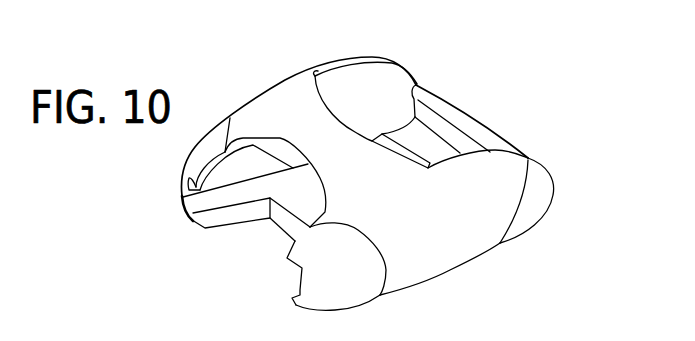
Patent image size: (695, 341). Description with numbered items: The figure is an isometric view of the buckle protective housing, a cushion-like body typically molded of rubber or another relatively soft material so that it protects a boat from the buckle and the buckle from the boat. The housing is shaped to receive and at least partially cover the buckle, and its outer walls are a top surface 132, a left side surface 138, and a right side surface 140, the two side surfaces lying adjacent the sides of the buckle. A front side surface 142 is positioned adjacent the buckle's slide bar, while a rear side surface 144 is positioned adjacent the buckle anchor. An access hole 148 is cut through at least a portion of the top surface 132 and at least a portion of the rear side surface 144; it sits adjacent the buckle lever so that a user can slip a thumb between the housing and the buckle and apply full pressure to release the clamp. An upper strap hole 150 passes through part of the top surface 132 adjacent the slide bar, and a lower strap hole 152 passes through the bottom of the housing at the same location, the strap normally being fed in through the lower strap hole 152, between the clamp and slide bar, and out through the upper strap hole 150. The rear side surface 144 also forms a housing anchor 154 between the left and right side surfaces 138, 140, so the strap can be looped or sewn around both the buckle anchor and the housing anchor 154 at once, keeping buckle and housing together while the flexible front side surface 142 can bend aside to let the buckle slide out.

The top surface 132 is at (310, 138).
The left side surface 138 is at (435, 258).
The right side surface 140 is at (230, 118).
The front side surface 142 is at (184, 189).
The rear side surface 144 is at (488, 123).
The access hole 148 is at (393, 90).
The upper strap hole 150 is at (243, 175).
The lower strap hole 152 is at (240, 243).
The housing anchor 154 is at (452, 108).